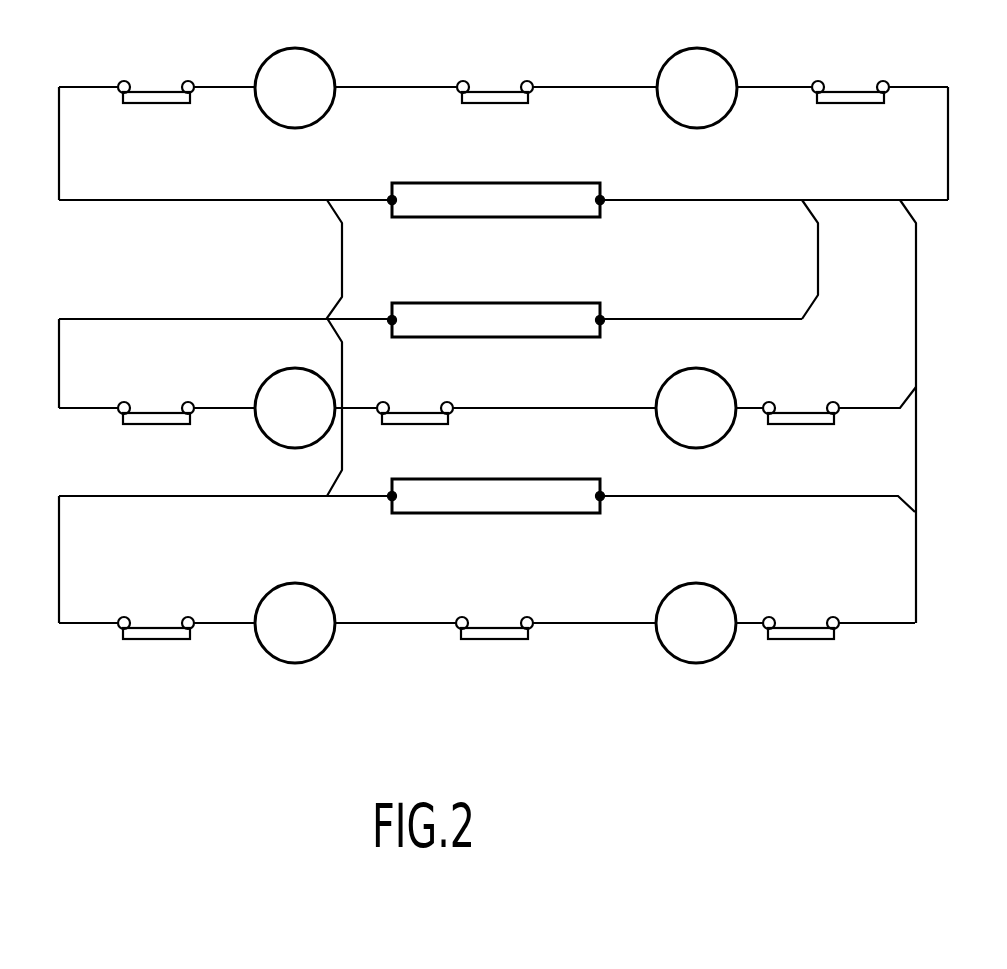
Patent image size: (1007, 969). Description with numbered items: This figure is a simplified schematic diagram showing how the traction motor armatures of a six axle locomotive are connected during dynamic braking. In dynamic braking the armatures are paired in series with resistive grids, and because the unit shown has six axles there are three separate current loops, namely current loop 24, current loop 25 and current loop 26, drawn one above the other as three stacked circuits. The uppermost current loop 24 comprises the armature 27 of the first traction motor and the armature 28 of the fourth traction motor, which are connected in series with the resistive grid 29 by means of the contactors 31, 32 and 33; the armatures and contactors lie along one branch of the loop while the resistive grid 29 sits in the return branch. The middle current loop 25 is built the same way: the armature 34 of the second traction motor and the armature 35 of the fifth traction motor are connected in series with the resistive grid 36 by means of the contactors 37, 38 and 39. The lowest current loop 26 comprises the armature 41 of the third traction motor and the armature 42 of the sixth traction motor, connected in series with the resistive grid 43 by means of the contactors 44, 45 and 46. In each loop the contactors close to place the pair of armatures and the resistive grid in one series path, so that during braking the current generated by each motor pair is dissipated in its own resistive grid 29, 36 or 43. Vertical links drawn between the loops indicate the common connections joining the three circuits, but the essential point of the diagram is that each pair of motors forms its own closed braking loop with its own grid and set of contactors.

The current loop 24 is at (542, 165).
The current loop 25 is at (512, 388).
The current loop 26 is at (527, 570).
The armature 27 is at (298, 48).
The armature 28 is at (695, 48).
The resistive grid 29 is at (428, 183).
The contactor 31 is at (168, 92).
The contactor 32 is at (500, 92).
The contactor 33 is at (862, 92).
The armature 34 is at (295, 368).
The armature 35 is at (689, 368).
The resistive grid 36 is at (478, 303).
The contactor 37 is at (168, 413).
The contactor 38 is at (427, 413).
The contactor 39 is at (808, 413).
The armature 41 is at (298, 583).
The armature 42 is at (670, 584).
The resistive grid 43 is at (488, 479).
The contactor 44 is at (168, 628).
The contactor 45 is at (506, 628).
The contactor 46 is at (813, 628).